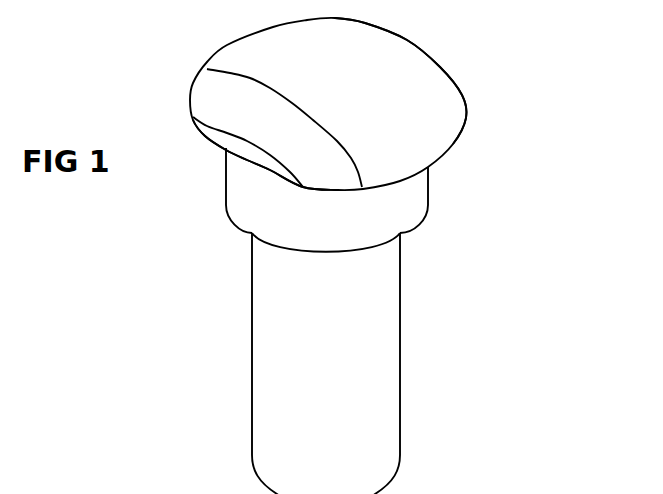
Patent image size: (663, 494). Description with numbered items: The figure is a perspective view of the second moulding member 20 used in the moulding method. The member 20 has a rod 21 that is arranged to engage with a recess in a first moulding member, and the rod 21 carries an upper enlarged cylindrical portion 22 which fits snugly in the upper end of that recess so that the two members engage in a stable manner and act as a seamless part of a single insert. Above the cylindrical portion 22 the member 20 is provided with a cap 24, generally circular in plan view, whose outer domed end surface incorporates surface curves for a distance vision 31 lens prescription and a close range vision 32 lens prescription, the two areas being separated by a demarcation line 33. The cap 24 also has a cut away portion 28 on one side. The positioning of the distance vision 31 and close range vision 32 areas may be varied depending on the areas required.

The second moulding member 20 is at (223, 51).
The rod 21 is at (252, 360).
The upper enlarged cylindrical portion 22 is at (258, 197).
The cap 24 is at (465, 100).
The cut away portion 28 is at (242, 153).
The distance vision surface curve 31 is at (430, 130).
The close range vision surface curve 32 is at (220, 116).
The demarcation line 33 is at (207, 69).